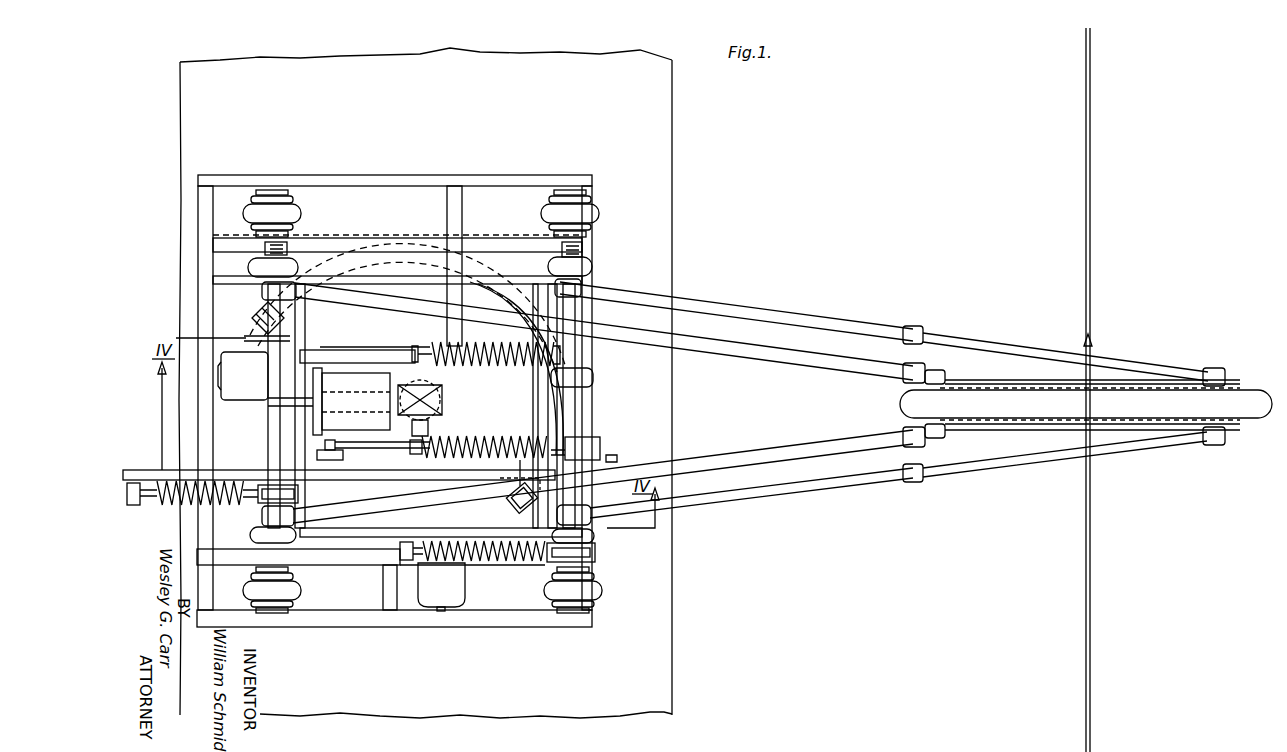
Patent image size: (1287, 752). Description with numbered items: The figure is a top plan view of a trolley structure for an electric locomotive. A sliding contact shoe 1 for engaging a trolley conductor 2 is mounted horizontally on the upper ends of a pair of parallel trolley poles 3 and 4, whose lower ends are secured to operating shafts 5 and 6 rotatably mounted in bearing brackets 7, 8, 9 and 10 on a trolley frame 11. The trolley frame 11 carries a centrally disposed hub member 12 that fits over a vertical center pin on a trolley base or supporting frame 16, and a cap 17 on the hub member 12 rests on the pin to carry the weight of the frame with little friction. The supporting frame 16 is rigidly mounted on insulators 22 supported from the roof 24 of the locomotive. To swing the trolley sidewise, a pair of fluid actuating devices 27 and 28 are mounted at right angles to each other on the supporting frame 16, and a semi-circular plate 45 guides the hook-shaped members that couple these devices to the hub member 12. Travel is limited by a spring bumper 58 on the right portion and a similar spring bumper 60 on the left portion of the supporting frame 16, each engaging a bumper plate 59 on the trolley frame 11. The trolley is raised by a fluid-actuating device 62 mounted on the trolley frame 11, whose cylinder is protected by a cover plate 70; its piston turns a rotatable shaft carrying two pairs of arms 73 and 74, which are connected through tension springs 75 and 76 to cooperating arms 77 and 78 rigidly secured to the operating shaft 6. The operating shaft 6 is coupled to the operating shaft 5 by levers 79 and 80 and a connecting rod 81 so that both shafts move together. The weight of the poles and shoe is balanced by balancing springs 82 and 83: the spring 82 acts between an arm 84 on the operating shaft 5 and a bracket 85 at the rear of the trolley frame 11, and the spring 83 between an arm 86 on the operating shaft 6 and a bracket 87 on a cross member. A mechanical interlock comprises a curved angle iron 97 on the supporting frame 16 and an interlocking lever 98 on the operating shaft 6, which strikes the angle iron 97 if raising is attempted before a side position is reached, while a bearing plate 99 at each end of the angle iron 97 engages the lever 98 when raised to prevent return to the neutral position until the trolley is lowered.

The sliding contact shoe 1 is at (1252, 392).
The trolley conductor 2 is at (1091, 500).
The trolley pole 3 is at (848, 440).
The trolley pole 4 is at (886, 331).
The operating shaft 5 is at (268, 444).
The operating shaft 6 is at (588, 314).
The bearing bracket 7 is at (250, 268).
The bearing bracket 8 is at (252, 534).
The bearing bracket 9 is at (590, 266).
The bearing bracket 10 is at (596, 538).
The trolley frame 11 is at (352, 537).
The hub member 12 is at (420, 430).
The trolley base or supporting frame 16 is at (376, 627).
The cap 17 is at (400, 406).
The insulator 22 is at (300, 213).
The roof 24 is at (665, 652).
The fluid actuating device 27 is at (260, 389).
The fluid actuating device 28 is at (454, 594).
The semi-circular plate 45 is at (480, 346).
The spring bumper 58 is at (512, 512).
The bumper plate 59 is at (585, 490).
The spring bumper 60 is at (252, 320).
The fluid-actuating device 62 is at (351, 401).
The cover plate 70 is at (300, 402).
The arms 73 is at (343, 457).
The arms 74 is at (348, 350).
The tension spring 75 is at (520, 436).
The tension spring 76 is at (436, 344).
The cooperating arm 77 is at (584, 439).
The cooperating arm 78 is at (594, 377).
The lever 79 is at (265, 247).
The lever 80 is at (583, 248).
The connecting rod 81 is at (496, 240).
The balancing spring 82 is at (183, 506).
The balancing spring 83 is at (500, 562).
The arm 84 is at (298, 492).
The bracket 85 is at (133, 506).
The arm 86 is at (596, 553).
The bracket 87 is at (408, 561).
The curved angle iron 97 is at (516, 285).
The interlocking lever 98 is at (515, 473).
The bearing plate 99 is at (628, 450).